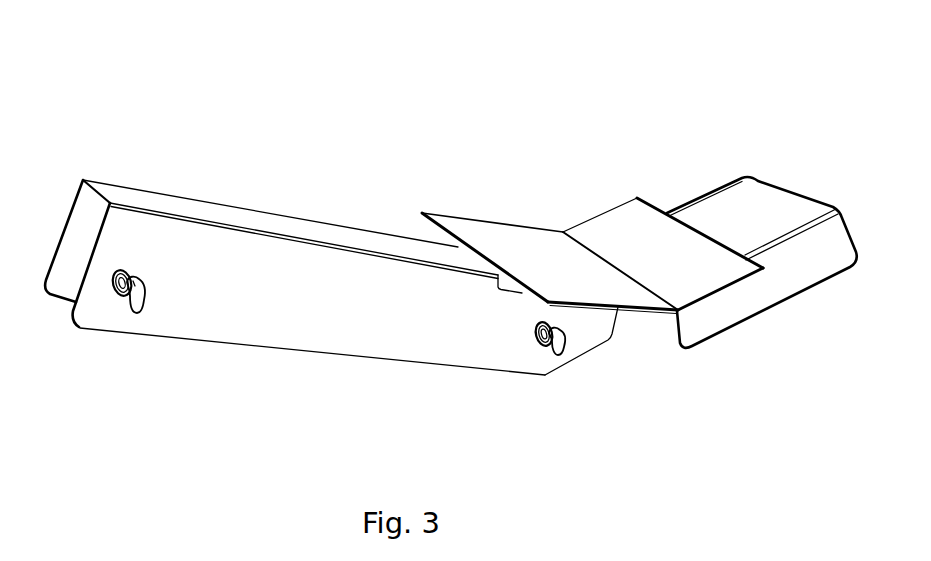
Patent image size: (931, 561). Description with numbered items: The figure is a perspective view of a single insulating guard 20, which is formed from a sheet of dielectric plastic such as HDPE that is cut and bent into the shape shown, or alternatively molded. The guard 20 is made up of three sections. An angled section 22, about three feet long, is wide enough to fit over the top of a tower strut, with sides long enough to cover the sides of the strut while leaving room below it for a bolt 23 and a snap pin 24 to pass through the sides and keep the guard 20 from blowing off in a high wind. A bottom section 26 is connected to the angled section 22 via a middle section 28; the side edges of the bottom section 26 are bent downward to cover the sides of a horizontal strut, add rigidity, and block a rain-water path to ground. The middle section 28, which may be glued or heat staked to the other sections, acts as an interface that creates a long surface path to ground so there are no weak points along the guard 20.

The guard 20 is at (360, 70).
The angled section 22 is at (333, 320).
The bolt 23 is at (136, 312).
The snap pin 24 is at (558, 354).
The bottom section 26 is at (788, 270).
The middle section 28 is at (627, 230).